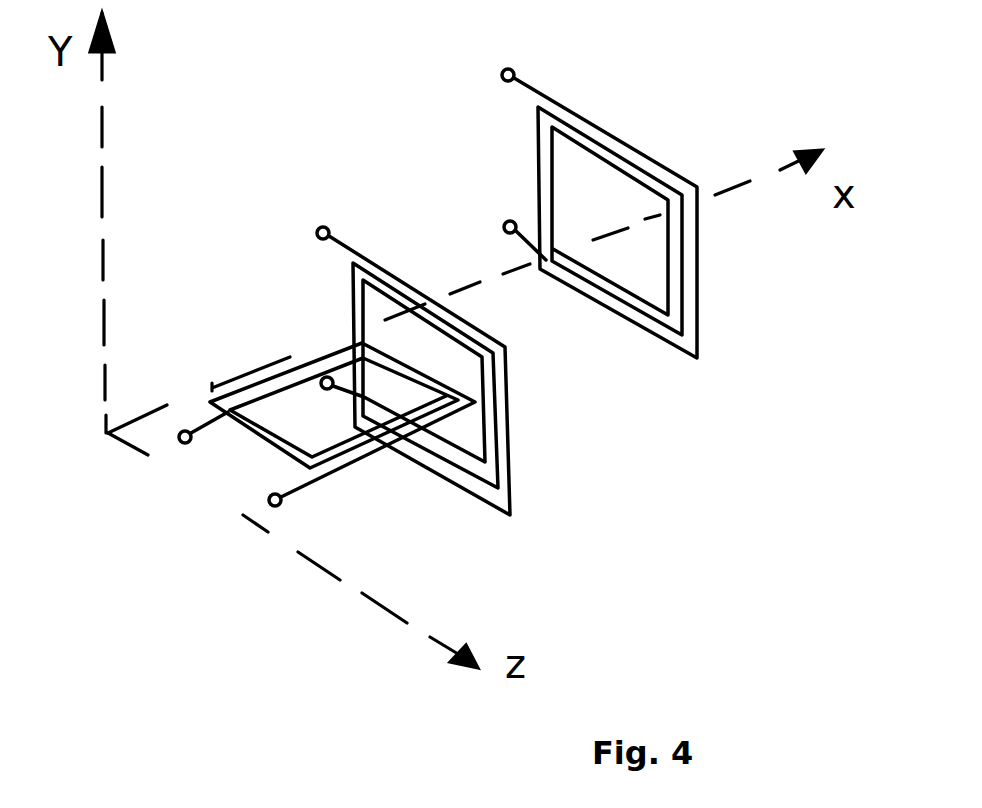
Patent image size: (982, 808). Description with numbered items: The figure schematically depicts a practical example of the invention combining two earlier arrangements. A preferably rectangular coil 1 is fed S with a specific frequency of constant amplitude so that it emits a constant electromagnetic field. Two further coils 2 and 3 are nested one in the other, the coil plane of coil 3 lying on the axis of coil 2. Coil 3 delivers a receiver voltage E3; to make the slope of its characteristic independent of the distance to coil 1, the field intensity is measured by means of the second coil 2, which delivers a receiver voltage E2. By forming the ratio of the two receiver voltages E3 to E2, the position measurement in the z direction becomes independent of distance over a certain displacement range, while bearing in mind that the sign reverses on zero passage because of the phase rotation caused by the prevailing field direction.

The coil 1 is at (609, 213).
The second coil 2 is at (397, 371).
The coil 3 is at (297, 443).
The feed S is at (566, 213).
The receiver voltage E2 is at (320, 255).
The receiver voltage E3 is at (255, 508).